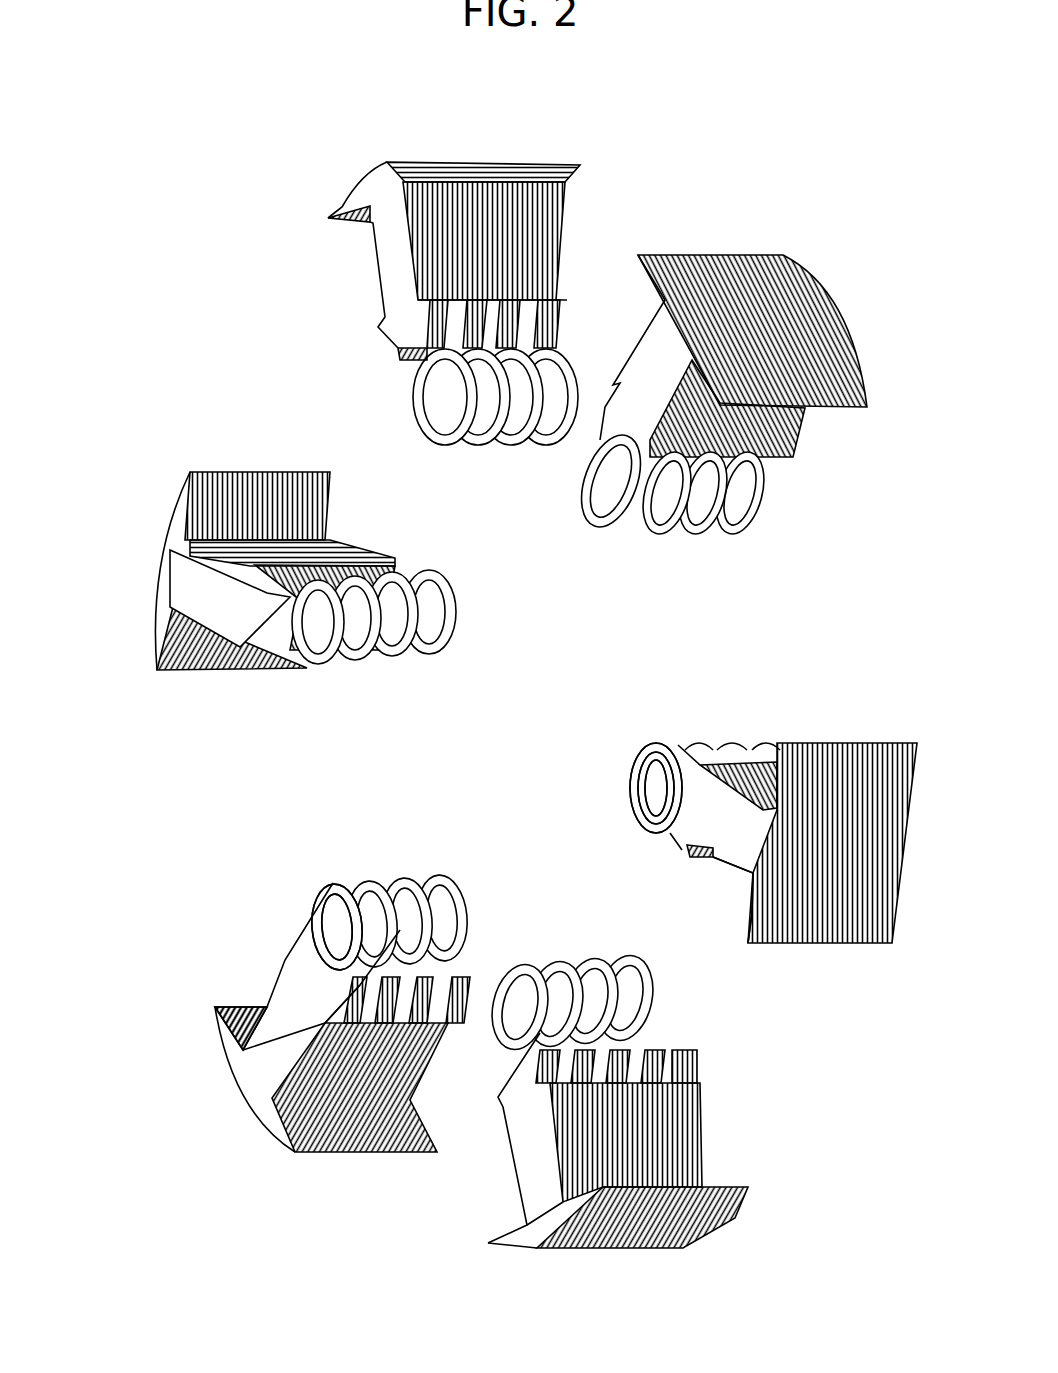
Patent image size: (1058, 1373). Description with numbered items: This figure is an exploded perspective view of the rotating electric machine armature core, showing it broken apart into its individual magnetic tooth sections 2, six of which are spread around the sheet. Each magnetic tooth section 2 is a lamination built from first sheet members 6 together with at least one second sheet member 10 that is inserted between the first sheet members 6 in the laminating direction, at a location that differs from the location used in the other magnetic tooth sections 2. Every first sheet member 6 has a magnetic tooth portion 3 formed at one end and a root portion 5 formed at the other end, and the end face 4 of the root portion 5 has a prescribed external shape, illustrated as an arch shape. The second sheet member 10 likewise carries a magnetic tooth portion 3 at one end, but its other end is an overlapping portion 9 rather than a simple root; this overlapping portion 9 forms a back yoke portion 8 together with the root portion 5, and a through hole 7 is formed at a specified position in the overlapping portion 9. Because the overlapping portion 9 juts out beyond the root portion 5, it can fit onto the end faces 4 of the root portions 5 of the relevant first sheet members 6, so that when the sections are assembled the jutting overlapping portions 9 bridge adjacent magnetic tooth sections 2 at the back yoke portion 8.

The magnetic tooth section 2 is at (343, 207).
The magnetic tooth portion 3 is at (227, 1028).
The end face 4 is at (670, 803).
The root portion 5 is at (330, 1010).
The first sheet member 6 is at (534, 748).
The through hole 7 is at (330, 892).
The back yoke portion 8 is at (180, 924).
The overlapping portion 9 is at (307, 933).
The second sheet member 10 is at (180, 812).